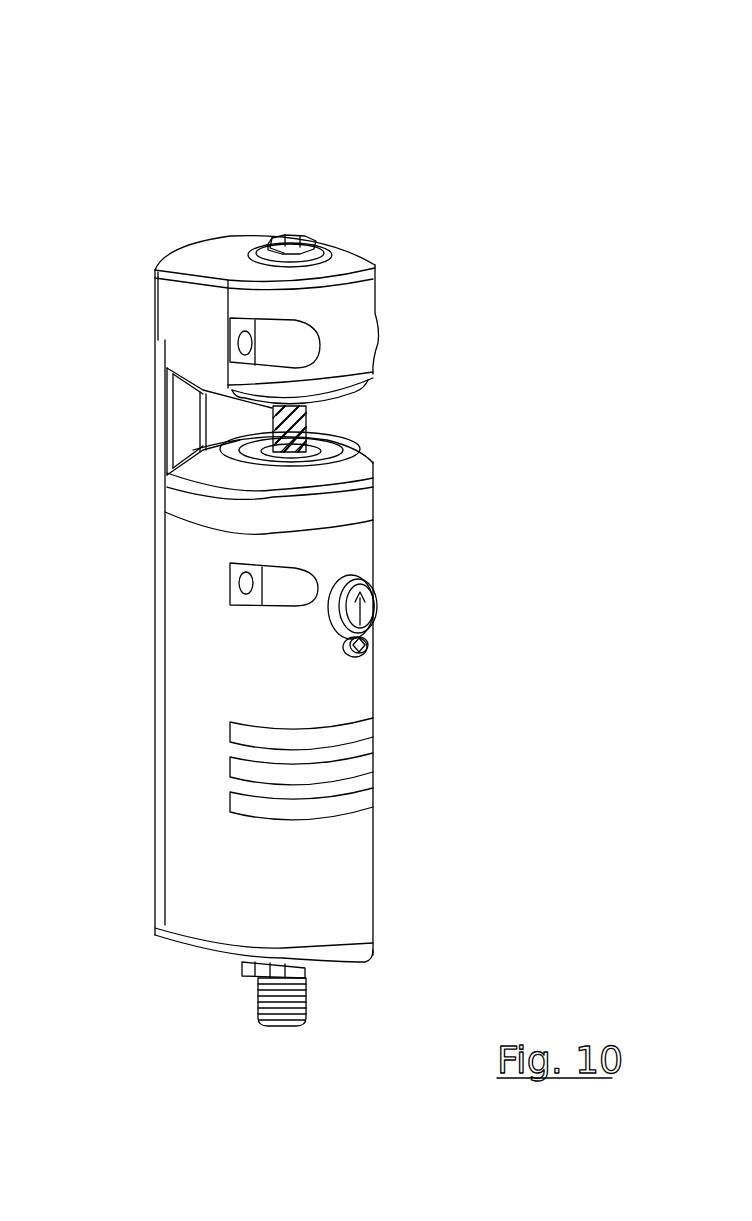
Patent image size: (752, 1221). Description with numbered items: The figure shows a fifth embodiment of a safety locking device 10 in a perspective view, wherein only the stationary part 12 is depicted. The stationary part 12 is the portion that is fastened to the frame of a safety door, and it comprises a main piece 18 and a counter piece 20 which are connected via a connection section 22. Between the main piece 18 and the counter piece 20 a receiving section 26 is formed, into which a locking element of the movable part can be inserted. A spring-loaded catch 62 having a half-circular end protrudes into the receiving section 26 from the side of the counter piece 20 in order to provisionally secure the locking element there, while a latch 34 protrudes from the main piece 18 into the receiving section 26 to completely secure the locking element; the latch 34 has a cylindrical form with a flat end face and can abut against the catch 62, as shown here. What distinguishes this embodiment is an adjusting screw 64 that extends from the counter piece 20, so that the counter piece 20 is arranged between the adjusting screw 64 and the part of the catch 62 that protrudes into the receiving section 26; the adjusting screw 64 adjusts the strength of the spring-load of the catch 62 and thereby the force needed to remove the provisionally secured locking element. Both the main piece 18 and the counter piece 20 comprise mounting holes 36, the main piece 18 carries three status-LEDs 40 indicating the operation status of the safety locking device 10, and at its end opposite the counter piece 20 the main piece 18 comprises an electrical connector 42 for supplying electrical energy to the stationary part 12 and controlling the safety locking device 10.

The safety locking device 10 is at (360, 95).
The stationary part 12 is at (378, 540).
The main piece 18 is at (348, 688).
The counter piece 20 is at (360, 290).
The connection section 22 is at (167, 412).
The receiving section 26 is at (370, 422).
The latch 34 is at (272, 421).
The mounting holes 36 is at (230, 592).
The status-LEDs 40 is at (400, 738).
The electrical connector 42 is at (290, 1012).
The catch 62 is at (340, 408).
The adjusting screw 64 is at (292, 240).